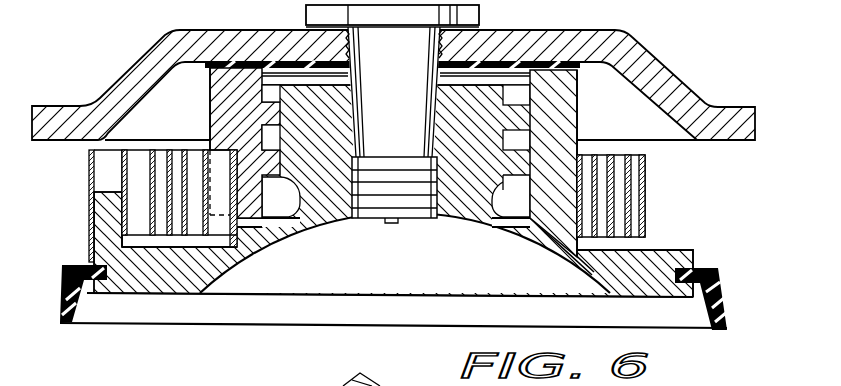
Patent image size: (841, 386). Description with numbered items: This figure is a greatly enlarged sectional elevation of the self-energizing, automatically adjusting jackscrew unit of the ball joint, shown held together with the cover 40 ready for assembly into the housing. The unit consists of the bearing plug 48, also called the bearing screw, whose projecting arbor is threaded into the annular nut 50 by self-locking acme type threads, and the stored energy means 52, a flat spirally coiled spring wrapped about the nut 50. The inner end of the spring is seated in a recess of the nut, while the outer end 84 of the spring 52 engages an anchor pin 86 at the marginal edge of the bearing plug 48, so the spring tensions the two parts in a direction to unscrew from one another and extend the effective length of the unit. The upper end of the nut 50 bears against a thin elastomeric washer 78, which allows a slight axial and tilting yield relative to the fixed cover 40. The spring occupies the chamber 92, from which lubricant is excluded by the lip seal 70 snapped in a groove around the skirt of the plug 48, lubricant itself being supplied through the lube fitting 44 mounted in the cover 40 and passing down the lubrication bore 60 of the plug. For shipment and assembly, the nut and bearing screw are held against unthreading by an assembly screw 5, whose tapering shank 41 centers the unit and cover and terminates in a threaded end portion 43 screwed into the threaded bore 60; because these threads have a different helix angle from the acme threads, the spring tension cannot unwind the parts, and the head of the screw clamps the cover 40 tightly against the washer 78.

The cover 40 is at (594, 42).
The chamber 92 is at (172, 107).
The elastomeric washer 78 is at (245, 62).
The bearing plug 48 is at (476, 193).
The nut 50 is at (567, 142).
The tapering shank 41 is at (357, 130).
The bolt head 5 is at (470, 15).
The threaded end portion 43 is at (392, 192).
The lubrication bore 60 is at (406, 214).
The outer end of spring 84 is at (90, 174).
The anchor pin 86 is at (107, 215).
The stored energy means 52 is at (645, 203).
The lip seal 70 is at (724, 294).
The lube fitting 44 is at (382, 385).